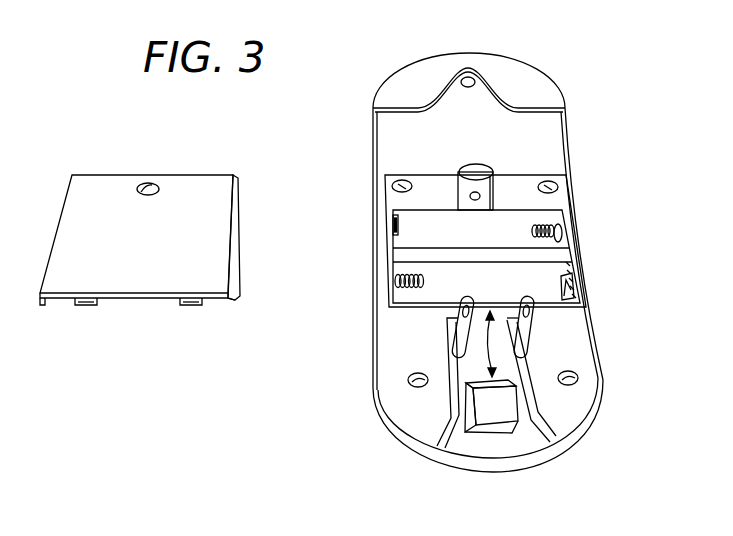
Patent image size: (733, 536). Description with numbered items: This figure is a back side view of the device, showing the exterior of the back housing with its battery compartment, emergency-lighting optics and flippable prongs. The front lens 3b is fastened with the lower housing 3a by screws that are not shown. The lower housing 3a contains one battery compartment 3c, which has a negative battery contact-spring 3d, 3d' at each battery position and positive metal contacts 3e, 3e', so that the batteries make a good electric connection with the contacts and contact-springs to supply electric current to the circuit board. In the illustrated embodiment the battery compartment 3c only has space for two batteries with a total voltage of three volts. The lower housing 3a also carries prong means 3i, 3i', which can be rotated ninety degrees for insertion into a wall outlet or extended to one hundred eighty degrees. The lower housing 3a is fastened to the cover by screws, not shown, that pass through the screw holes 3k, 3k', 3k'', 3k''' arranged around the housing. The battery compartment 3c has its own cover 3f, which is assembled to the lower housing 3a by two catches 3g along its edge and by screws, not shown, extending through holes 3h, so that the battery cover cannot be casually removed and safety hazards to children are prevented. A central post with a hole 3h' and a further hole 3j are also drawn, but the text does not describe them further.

The lower housing 3a is at (393, 128).
The front lens 3b is at (517, 76).
The battery compartment 3c is at (433, 236).
The negative battery contact-spring 3d is at (373, 293).
The negative battery contact-spring 3d' is at (585, 219).
The positive metal contact 3e is at (361, 239).
The positive metal contact 3e' is at (604, 279).
The cover 3f is at (187, 192).
The catches 3g is at (180, 307).
The holes 3h is at (131, 163).
The screw hole of post 3h' is at (407, 156).
The prong means 3i is at (406, 328).
The prong means 3i' is at (582, 326).
The post 3j is at (478, 176).
The screw hole 3k is at (371, 173).
The screw hole 3k' is at (584, 167).
The screw hole 3k'' is at (609, 408).
The screw hole 3k''' is at (376, 414).